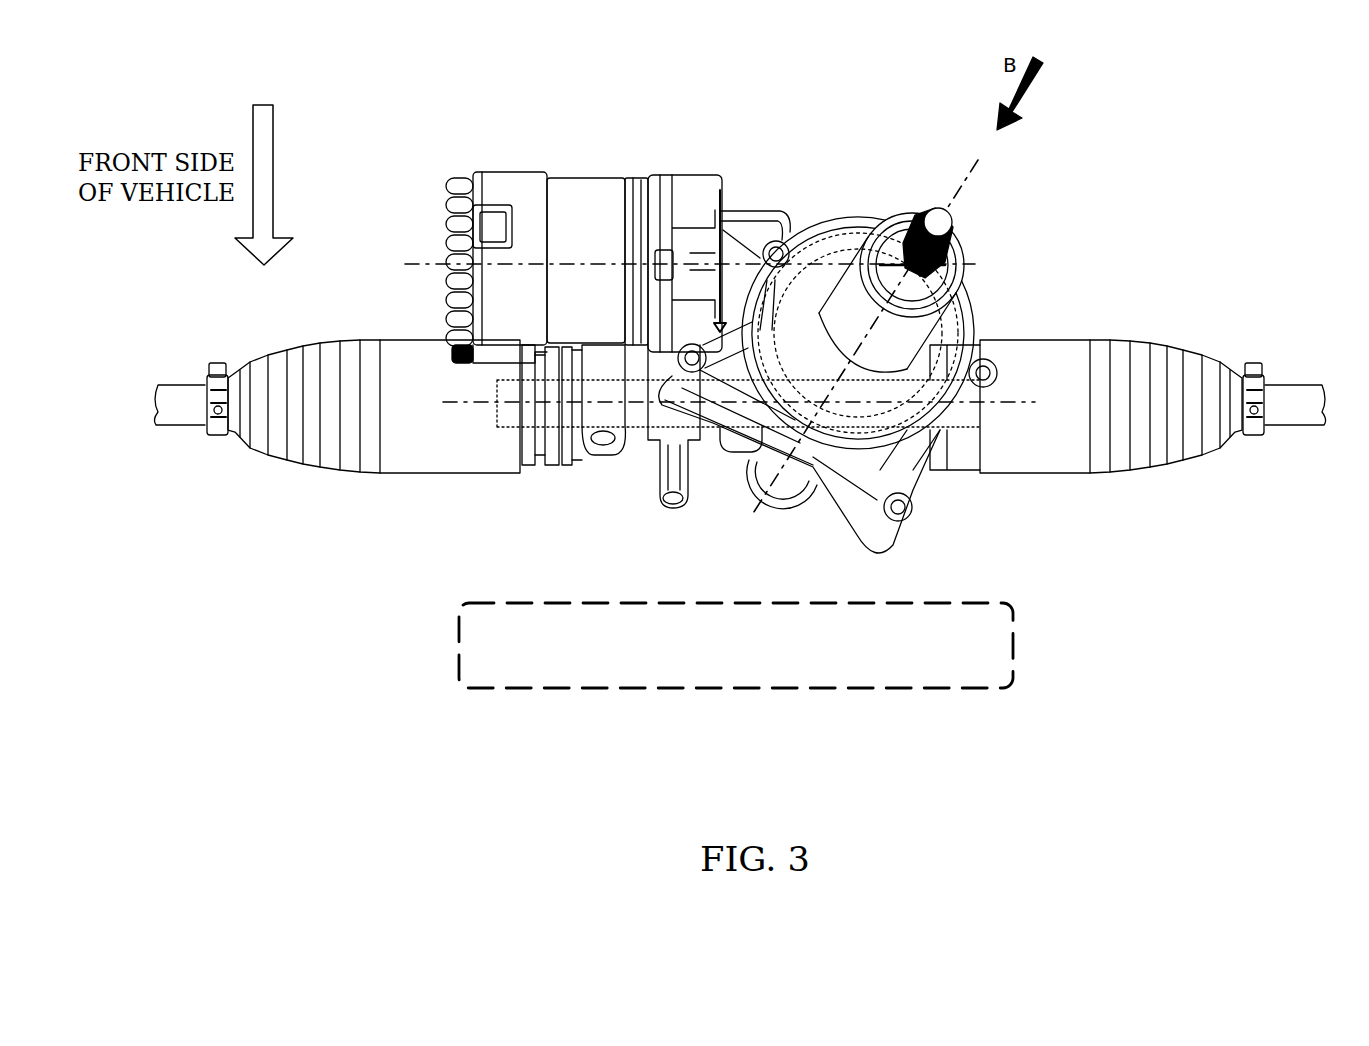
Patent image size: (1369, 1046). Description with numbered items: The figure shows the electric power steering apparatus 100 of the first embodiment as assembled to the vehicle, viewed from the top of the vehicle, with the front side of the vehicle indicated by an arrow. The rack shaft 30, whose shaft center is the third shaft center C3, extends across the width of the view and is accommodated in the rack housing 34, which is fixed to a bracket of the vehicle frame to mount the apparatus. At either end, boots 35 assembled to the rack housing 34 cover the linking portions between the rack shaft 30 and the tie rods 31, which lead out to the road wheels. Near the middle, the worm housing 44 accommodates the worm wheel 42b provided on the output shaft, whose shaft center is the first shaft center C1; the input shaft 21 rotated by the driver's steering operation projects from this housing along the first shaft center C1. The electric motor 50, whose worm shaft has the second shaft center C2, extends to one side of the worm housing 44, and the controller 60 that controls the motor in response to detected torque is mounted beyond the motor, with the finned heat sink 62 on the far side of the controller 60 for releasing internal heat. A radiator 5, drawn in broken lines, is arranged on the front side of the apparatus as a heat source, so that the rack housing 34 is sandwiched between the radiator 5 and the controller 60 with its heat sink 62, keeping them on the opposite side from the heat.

The radiator 5 is at (1016, 645).
The input shaft 21 is at (958, 228).
The rack shaft 30 is at (708, 437).
The tie rods 31 is at (167, 415).
The rack housing 34 is at (638, 440).
The boots 35 is at (400, 455).
The worm wheel 42b is at (818, 258).
The worm housing 44 is at (843, 235).
The electric motor 50 is at (588, 200).
The controller 60 is at (508, 190).
The heat sink 62 is at (468, 175).
The electric power steering apparatus 100 is at (1148, 222).
The first shaft center C1 is at (975, 166).
The second shaft center C2 is at (405, 264).
The third shaft center C3 is at (465, 405).